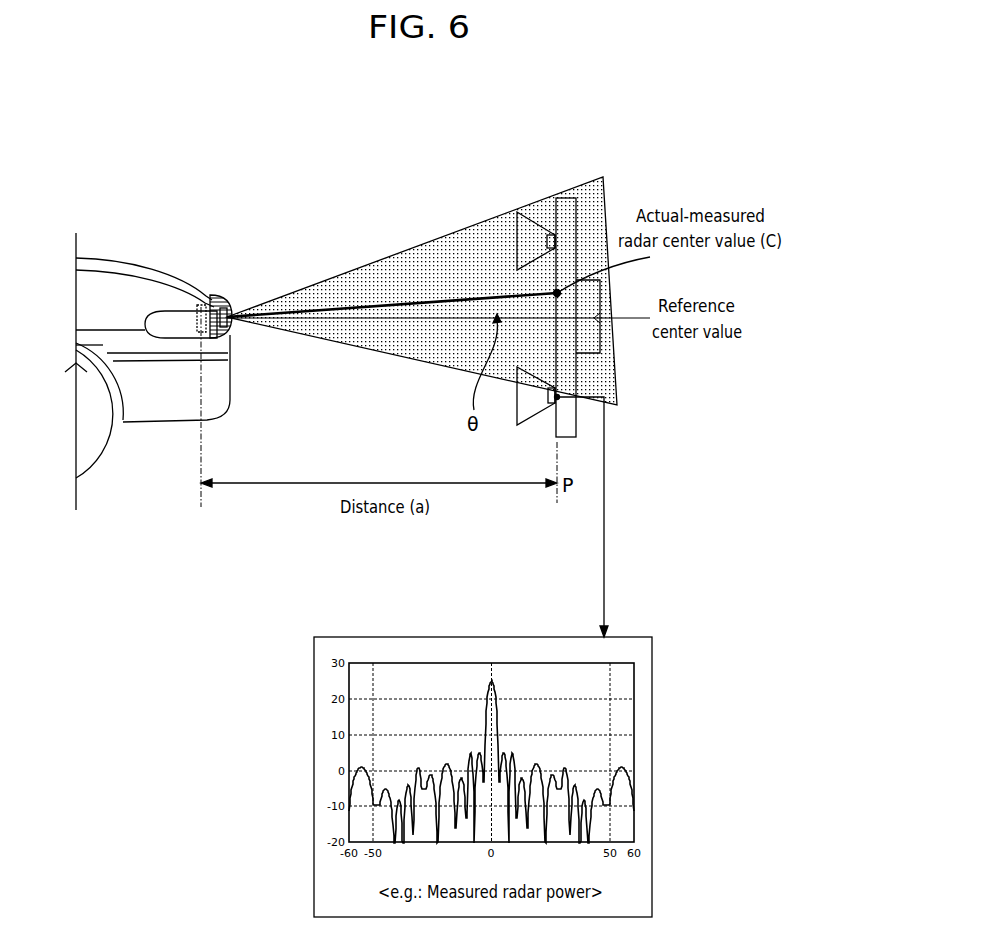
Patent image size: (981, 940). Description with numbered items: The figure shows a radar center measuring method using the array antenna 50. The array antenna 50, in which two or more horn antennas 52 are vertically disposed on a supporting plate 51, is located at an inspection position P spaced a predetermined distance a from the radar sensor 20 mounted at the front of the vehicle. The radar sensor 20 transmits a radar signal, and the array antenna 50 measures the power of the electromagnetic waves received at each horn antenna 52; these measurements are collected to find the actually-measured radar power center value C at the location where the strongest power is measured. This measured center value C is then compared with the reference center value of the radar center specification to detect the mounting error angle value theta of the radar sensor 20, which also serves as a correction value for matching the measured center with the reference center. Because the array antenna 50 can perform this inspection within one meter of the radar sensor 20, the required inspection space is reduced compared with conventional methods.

The radar sensor 20 is at (203, 303).
The array antenna 50 is at (534, 273).
The target plate 51 is at (555, 205).
The horn antenna 52 is at (517, 215).